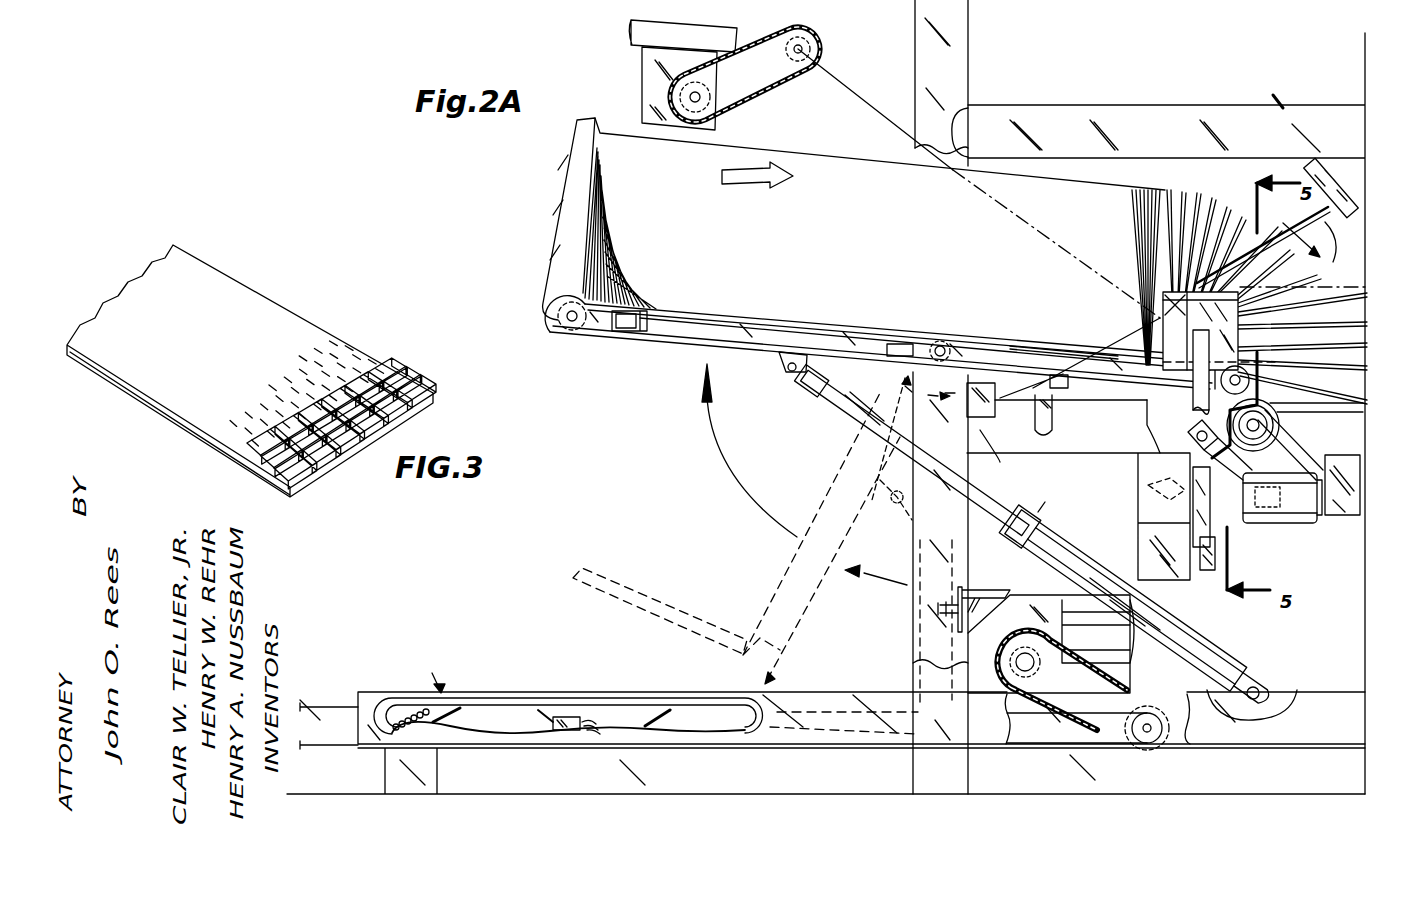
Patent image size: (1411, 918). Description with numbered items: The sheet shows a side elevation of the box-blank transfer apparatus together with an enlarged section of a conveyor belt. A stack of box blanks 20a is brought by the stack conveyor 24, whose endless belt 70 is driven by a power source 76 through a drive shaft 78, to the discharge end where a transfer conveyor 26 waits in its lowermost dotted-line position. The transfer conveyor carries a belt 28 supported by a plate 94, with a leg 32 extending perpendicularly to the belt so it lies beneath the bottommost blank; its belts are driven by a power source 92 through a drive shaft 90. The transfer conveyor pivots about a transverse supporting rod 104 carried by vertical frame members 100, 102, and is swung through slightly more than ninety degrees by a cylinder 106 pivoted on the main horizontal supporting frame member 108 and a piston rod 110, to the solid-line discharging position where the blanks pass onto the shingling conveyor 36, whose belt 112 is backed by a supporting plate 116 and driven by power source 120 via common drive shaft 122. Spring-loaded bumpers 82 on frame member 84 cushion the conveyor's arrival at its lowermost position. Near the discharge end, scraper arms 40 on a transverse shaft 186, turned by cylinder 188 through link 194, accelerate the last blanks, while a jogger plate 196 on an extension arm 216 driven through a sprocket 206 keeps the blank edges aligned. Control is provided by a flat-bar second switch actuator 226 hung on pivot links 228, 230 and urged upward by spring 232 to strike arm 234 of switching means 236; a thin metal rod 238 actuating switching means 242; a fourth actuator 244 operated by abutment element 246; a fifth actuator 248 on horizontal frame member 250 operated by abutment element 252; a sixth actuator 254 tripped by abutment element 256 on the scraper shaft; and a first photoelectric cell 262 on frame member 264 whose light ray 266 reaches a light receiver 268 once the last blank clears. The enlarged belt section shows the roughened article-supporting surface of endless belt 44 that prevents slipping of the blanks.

In FIG. 2A, the stack of box blanks 20a is at (703, 244).
In FIG. 2A, the stack conveyor 24 is at (523, 732).
In FIG. 2A, the transfer conveyor 26 is at (850, 324).
In FIG. 2A, the belt 28 is at (880, 337).
In FIG. 2A, the leg 32 is at (568, 200).
In FIG. 2A, the shingling conveyor 36 is at (1320, 402).
In FIG. 2A, the scraper arm 40 is at (1036, 347).
In FIG. 3, the endless belt 44 is at (319, 346).
In FIG. 2A, the endless belt 70 is at (312, 703).
In FIG. 2A, the power source 76 is at (1115, 662).
In FIG. 2A, the drive shaft 78 is at (1147, 735).
In FIG. 2A, the spring-loaded bumper 82 is at (935, 609).
In FIG. 2A, the frame member 84 is at (974, 590).
In FIG. 2A, the drive shaft 90 is at (1265, 368).
In FIG. 2A, the power source 92 is at (640, 95).
In FIG. 2A, the plate 94 is at (793, 330).
In FIG. 2A, the vertical frame member 100 is at (957, 82).
In FIG. 2A, the vertical frame member 102 is at (962, 100).
In FIG. 2A, the transverse supporting rod 104 is at (944, 343).
In FIG. 2A, the cylinder 106 is at (1108, 546).
In FIG. 2A, the main horizontal supporting frame member 108 is at (1272, 692).
In FIG. 2A, the piston rod 110 is at (836, 408).
In FIG. 2A, the endless belt 112 is at (1312, 436).
In FIG. 2A, the supporting plate 116 is at (1312, 525).
In FIG. 2A, the power source 120 is at (1250, 527).
In FIG. 2A, the common drive shaft 122 is at (1295, 527).
In FIG. 2A, the transverse shaft 186 is at (1150, 458).
In FIG. 2A, the cylinder 188 is at (1340, 530).
In FIG. 2A, the link 194 is at (1220, 455).
In FIG. 2A, the jogger plate 196 is at (1163, 318).
In FIG. 2A, the sprocket 206 is at (1207, 575).
In FIG. 2A, the extension arm 216 is at (1120, 432).
In FIG. 2A, the second switch actuator 226 is at (582, 705).
In FIG. 2A, the pivot link 228 is at (462, 707).
In FIG. 2A, the pivot link 230 is at (653, 707).
In FIG. 2A, the spring 232 is at (408, 723).
In FIG. 2A, the arm 234 is at (547, 717).
In FIG. 2A, the switching means 236 is at (572, 727).
In FIG. 2A, the thin metal rod 238 is at (978, 432).
In FIG. 2A, the switching means 242 is at (1040, 462).
In FIG. 2A, the fourth actuator 244 is at (912, 400).
In FIG. 2A, the abutment element 246 is at (895, 343).
In FIG. 2A, the fifth actuator 248 is at (1040, 410).
In FIG. 2A, the horizontal frame member 250 is at (1075, 455).
In FIG. 2A, the abutment element 252 is at (1062, 374).
In FIG. 2A, the sixth actuator 254 is at (1148, 492).
In FIG. 2A, the abutment element 256 is at (1218, 438).
In FIG. 2A, the first photoelectric cell 262 is at (1325, 162).
In FIG. 2A, the frame member 264 is at (1298, 97).
In FIG. 2A, the light ray 266 is at (1318, 253).
In FIG. 2A, the light receiver 268 is at (1015, 388).